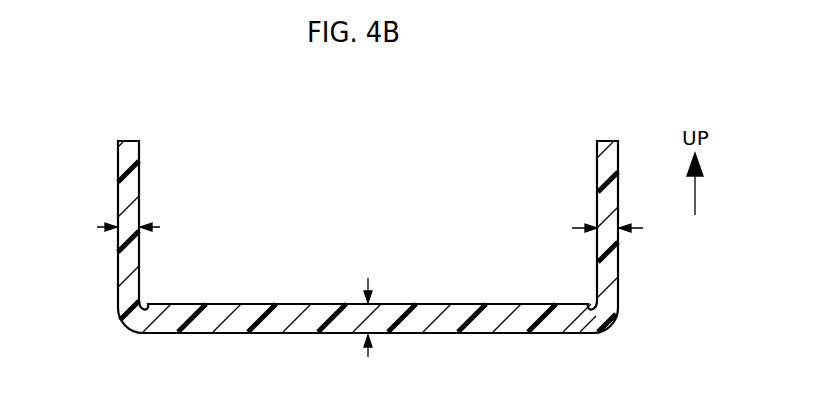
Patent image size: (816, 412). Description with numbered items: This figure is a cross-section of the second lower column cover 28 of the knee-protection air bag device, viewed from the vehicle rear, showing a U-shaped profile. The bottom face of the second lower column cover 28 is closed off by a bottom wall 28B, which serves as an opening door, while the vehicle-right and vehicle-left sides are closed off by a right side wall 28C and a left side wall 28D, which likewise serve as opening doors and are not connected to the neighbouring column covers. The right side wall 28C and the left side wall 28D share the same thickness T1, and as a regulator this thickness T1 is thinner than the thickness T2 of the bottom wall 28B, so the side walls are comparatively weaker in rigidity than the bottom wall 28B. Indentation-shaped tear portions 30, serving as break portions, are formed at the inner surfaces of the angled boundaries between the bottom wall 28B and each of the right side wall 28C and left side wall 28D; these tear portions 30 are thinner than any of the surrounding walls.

The second lower column cover 28 is at (478, 121).
The left side wall 28D is at (116, 260).
The right side wall 28C is at (620, 262).
The bottom wall 28B is at (298, 337).
The tear portion 30 is at (138, 318).
The thickness of the side walls T1 is at (128, 226).
The thickness of the bottom wall T2 is at (357, 332).